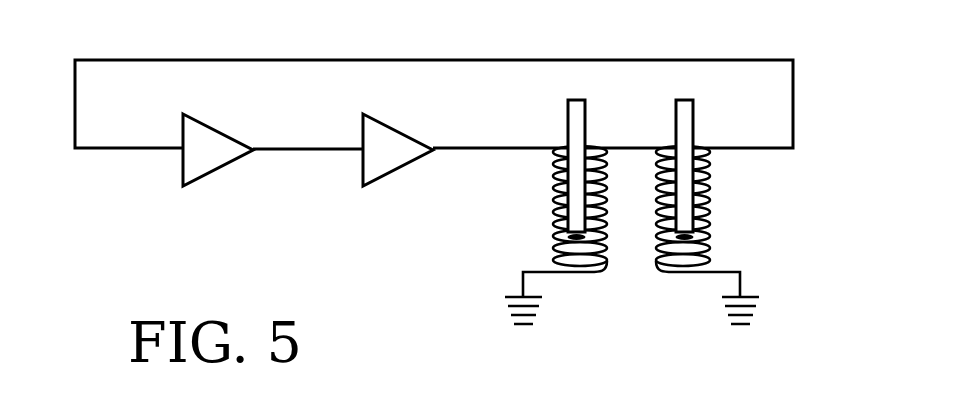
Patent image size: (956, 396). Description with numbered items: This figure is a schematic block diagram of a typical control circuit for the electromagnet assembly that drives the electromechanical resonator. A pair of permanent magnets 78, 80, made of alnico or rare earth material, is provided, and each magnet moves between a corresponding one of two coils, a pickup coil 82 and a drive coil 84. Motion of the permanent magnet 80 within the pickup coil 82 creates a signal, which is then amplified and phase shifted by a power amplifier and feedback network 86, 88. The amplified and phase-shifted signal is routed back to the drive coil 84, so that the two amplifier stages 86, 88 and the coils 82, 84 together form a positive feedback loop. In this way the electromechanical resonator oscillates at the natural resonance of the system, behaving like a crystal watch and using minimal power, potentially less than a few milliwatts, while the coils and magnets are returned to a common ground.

The permanent magnet 78 is at (575, 113).
The permanent magnet 80 is at (690, 117).
The pickup coil 82 is at (702, 206).
The drive coil 84 is at (553, 198).
The power amplifier 86 is at (208, 157).
The feedback network 88 is at (385, 158).